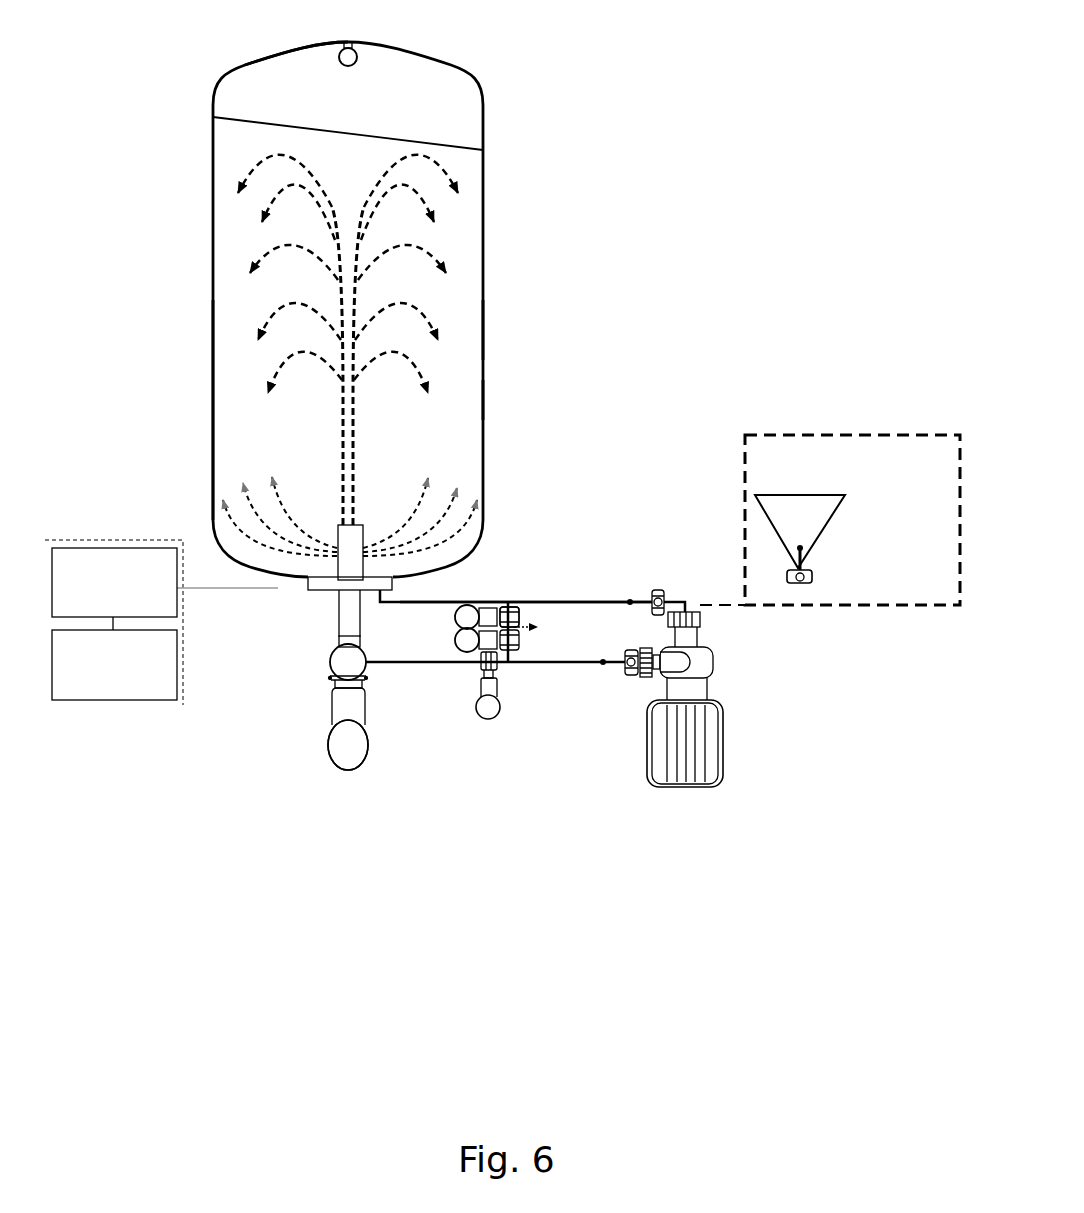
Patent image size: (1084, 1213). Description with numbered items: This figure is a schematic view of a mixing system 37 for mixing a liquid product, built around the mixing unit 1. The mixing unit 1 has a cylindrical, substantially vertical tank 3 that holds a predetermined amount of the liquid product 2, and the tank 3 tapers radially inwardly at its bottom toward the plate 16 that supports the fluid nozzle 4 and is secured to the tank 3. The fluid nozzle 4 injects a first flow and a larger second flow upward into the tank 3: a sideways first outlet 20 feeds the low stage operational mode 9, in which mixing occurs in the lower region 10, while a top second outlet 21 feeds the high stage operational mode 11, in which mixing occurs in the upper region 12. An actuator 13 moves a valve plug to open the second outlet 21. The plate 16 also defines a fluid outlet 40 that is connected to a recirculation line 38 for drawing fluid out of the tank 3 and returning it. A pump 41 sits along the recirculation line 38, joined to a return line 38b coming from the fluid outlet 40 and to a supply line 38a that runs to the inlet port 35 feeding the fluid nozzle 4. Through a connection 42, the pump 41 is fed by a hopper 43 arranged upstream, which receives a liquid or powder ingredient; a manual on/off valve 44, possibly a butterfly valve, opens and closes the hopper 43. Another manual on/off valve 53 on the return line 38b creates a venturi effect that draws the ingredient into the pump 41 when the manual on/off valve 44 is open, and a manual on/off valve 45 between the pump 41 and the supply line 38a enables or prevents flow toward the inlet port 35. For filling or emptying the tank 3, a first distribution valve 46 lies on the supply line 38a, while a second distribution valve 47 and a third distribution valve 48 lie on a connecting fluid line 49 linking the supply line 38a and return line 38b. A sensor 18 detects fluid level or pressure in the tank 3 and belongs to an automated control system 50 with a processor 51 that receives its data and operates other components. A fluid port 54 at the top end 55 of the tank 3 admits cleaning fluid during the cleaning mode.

The mixing unit 1 is at (495, 88).
The liquid product 2 is at (470, 400).
The tank 3 is at (484, 333).
The fluid nozzle 4 is at (345, 582).
The low stage operational mode 9 is at (480, 521).
The lower region 10 is at (210, 415).
The high stage operational mode 11 is at (452, 178).
The upper region 12 is at (210, 152).
The actuator 13 is at (366, 750).
The plate 16 is at (338, 598).
The sensor 18 is at (150, 547).
The first outlet 20 is at (330, 578).
The second outlet 21 is at (352, 540).
The inlet port 35 is at (328, 670).
The mixing system 37 is at (763, 112).
The recirculation line 38 is at (598, 600).
The supply line 38a is at (580, 661).
The return line 38b is at (464, 606).
The fluid outlet 40 is at (378, 604).
The pump 41 is at (724, 745).
The connection 42 is at (698, 603).
The hopper 43 is at (810, 502).
The manual on/off valve 44 is at (814, 577).
The manual on/off valve 45 is at (632, 680).
The first distribution valve 46 is at (480, 666).
The second distribution valve 47 is at (508, 608).
The third distribution valve 48 is at (522, 640).
The connecting fluid line 49 is at (516, 664).
The automated control system 50 is at (168, 712).
The processor 51 is at (108, 702).
The manual on/off valve 53 is at (662, 600).
The fluid port 54 is at (352, 52).
The top end 55 is at (250, 62).